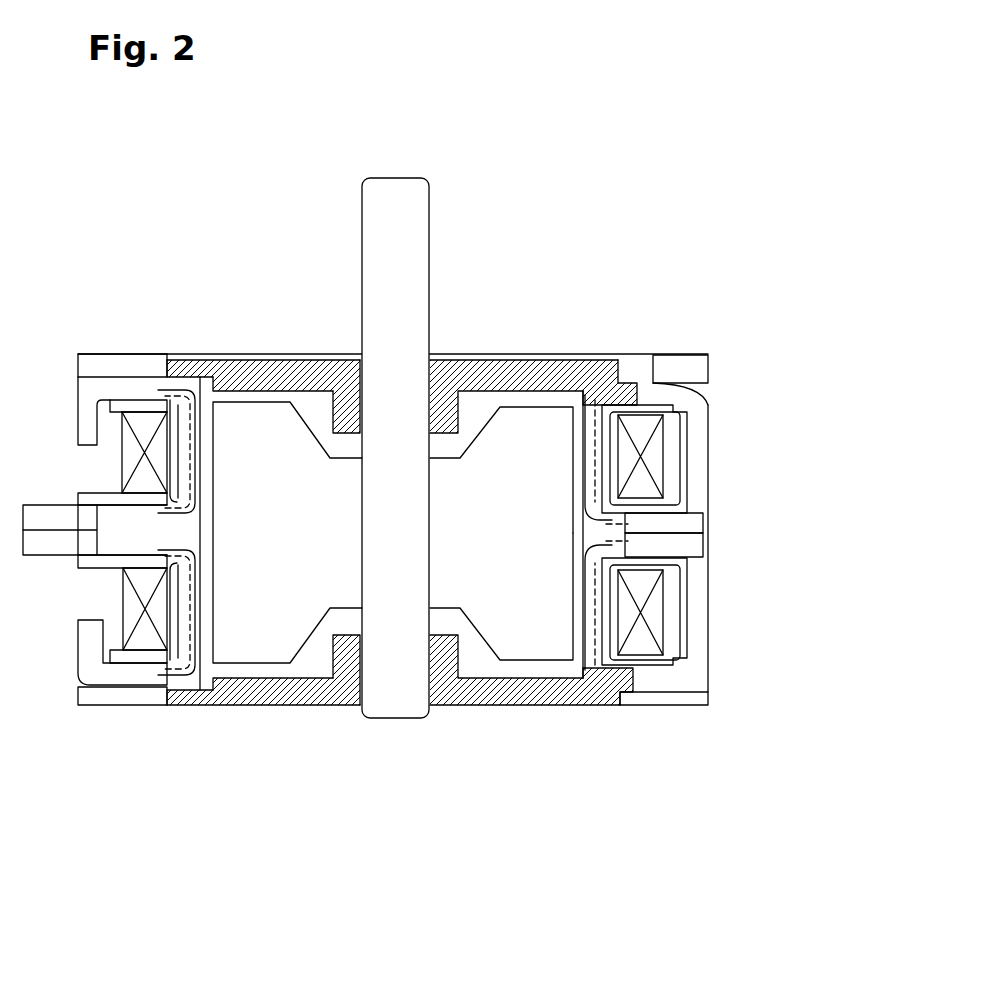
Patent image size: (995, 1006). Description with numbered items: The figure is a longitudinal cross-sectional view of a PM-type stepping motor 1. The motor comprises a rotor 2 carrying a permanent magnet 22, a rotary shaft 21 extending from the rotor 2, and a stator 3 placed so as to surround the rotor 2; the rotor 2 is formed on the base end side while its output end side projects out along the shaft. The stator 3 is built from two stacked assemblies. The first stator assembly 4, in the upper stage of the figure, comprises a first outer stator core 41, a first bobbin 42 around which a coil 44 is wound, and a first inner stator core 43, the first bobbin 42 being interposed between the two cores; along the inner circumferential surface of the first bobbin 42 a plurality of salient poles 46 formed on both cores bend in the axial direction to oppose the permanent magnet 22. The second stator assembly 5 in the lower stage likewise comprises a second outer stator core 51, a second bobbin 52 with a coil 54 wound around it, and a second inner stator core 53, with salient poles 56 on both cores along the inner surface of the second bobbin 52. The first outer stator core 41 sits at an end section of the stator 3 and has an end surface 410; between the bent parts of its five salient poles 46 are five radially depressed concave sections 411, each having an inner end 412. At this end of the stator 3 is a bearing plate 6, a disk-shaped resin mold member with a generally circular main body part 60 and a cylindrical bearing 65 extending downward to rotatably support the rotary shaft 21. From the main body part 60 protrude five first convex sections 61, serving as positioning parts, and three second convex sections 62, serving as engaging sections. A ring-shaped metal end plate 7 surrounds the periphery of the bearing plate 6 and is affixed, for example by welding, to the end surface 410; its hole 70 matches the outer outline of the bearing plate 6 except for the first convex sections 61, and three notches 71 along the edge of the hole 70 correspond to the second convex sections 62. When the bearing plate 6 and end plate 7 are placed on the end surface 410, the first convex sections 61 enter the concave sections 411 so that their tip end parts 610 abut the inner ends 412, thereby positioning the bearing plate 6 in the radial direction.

The stepping motor 1 is at (716, 161).
The rotor 2 is at (540, 424).
The rotary shaft 21 is at (416, 250).
The permanent magnet 22 is at (538, 628).
The stator 3 is at (482, 569).
The first stator assembly 4 is at (458, 452).
The first outer stator core 41 is at (697, 406).
The end surface 410 is at (676, 388).
The concave sections 411 is at (656, 380).
The inner ends 412 is at (667, 700).
The first bobbin 42 is at (643, 467).
The first inner stator core 43 is at (670, 520).
The coil 44 is at (641, 434).
The salient poles 46 is at (195, 482).
The second stator assembly 5 is at (458, 600).
The second outer stator core 51 is at (693, 652).
The second bobbin 52 is at (670, 583).
The second inner stator core 53 is at (673, 551).
The coil 54 is at (650, 613).
The salient poles 56 is at (195, 593).
The bearing plate 6 is at (535, 375).
The main body part 60 is at (493, 362).
The first convex sections 61 is at (635, 372).
The tip end parts 610 is at (645, 376).
The second convex sections 62 is at (188, 358).
The bearing 65 is at (345, 405).
The end plate 7 is at (694, 355).
The hole 70 is at (633, 700).
The notches 71 is at (161, 690).